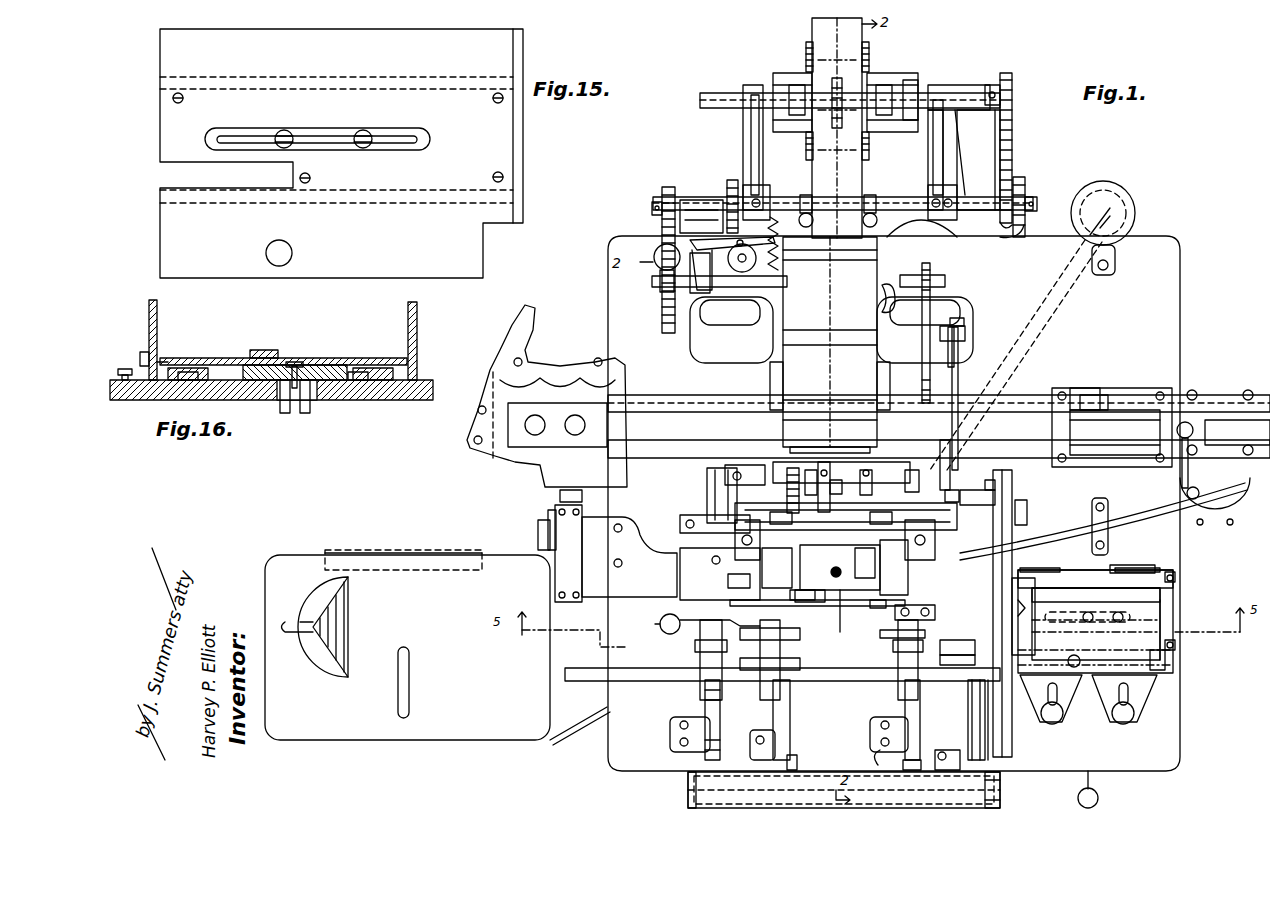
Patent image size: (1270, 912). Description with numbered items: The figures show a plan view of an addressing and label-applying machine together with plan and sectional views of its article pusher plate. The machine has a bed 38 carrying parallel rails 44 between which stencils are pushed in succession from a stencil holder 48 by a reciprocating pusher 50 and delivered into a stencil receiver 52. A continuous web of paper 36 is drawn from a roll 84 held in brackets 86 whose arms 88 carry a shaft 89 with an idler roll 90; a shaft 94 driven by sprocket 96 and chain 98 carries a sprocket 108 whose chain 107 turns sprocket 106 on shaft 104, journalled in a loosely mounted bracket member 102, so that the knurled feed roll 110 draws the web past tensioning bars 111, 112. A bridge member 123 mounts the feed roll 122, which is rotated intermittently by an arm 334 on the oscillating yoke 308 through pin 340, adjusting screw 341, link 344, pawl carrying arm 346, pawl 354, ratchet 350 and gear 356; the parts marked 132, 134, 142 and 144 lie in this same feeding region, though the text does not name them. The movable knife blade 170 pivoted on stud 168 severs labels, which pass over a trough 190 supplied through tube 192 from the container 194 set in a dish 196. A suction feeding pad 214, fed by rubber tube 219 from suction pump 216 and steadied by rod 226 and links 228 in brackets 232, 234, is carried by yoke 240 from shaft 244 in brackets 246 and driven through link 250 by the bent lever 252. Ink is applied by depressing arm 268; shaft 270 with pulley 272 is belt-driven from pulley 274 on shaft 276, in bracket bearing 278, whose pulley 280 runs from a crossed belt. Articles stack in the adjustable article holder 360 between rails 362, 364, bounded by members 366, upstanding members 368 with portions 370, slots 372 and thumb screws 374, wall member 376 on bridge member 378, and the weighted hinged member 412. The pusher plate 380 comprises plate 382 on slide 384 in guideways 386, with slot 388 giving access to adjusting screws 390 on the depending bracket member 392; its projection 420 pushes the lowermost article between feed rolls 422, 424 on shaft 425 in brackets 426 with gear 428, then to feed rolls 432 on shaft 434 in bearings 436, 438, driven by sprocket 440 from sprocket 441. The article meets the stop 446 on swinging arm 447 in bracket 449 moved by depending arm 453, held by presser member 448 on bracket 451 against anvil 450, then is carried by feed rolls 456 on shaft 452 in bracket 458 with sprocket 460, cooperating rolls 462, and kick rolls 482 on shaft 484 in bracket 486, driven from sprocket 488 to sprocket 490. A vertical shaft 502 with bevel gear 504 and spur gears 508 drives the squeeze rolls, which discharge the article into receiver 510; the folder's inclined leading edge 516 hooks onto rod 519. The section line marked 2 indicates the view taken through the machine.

In FIG. 1, the section line 2 is at (667, 257).
In FIG. 1, the continuous web of paper 36 is at (856, 175).
In FIG. 16, the bed 38 is at (422, 380).
In FIG. 1, the bed 38 is at (1172, 324).
In FIG. 1, the rails 44 is at (1014, 398).
In FIG. 1, the stencil holder 48 is at (1104, 390).
In FIG. 1, the pusher 50 is at (1136, 420).
In FIG. 1, the stencil receiver 52 is at (530, 440).
In FIG. 1, the roll of paper 84 is at (812, 30).
In FIG. 1, the brackets 86 is at (940, 86).
In FIG. 1, the rearwardly extending arms 88 is at (758, 165).
In FIG. 1, the shaft 89 is at (768, 93).
In FIG. 1, the idler roll 90 is at (912, 75).
In FIG. 1, the shaft 94 is at (1036, 205).
In FIG. 1, the sprocket 96 is at (1026, 185).
In FIG. 1, the chain 98 is at (1024, 232).
In FIG. 1, the bracket member 102 is at (990, 157).
In FIG. 1, the shaft 104 is at (892, 92).
In FIG. 1, the sprocket 106 is at (1013, 83).
In FIG. 1, the chain 107 is at (1003, 142).
In FIG. 1, the sprocket 108 is at (1002, 226).
In FIG. 1, the knurled feed roll 110 is at (836, 120).
In FIG. 1, the tensioning and curl-removing bar 111 is at (898, 198).
In FIG. 1, the tensioning and curl-removing bar 112 is at (910, 208).
In FIG. 1, the feed roll 122 is at (825, 487).
In FIG. 1, the bridge member 123 is at (765, 462).
In FIG. 1, the guide 132 is at (798, 481).
In FIG. 1, the guide 134 is at (870, 490).
In FIG. 1, the block 142 is at (840, 490).
In FIG. 1, the drum 144 is at (860, 470).
In FIG. 1, the stud 168 is at (786, 490).
In FIG. 1, the movable knife blade 170 is at (788, 524).
In FIG. 1, the trough 190 is at (890, 524).
In FIG. 1, the tube 192 is at (1120, 320).
In FIG. 1, the container 194 is at (1126, 205).
In FIG. 1, the dish like container 196 is at (1136, 212).
In FIG. 1, the suction feeding pad 214 is at (840, 567).
In FIG. 1, the suction pump 216 is at (1215, 520).
In FIG. 1, the rubber tube 219 is at (1132, 520).
In FIG. 1, the rod 226 is at (860, 573).
In FIG. 1, the pivoted links 228 is at (867, 609).
In FIG. 1, the bracket 232 is at (895, 586).
In FIG. 1, the bracket 234 is at (772, 558).
In FIG. 1, the reciprocating yoke 240 is at (849, 613).
In FIG. 1, the shaft 244 is at (849, 516).
In FIG. 1, the upstanding brackets 246 is at (735, 543).
In FIG. 1, the link 250 is at (768, 478).
In FIG. 1, the bent lever 252 is at (939, 424).
In FIG. 1, the forwardly extending arm 268 is at (882, 302).
In FIG. 1, the shaft 270 is at (665, 308).
In FIG. 1, the pulley 272 is at (672, 285).
In FIG. 1, the pulley 274 is at (662, 195).
In FIG. 1, the shaft 276 is at (650, 208).
In FIG. 1, the bracket bearing member 278 is at (695, 212).
In FIG. 1, the pulley 280 is at (728, 190).
In FIG. 1, the oscillating yoke 308 is at (962, 298).
In FIG. 1, the upwardly extending arm 334 is at (966, 333).
In FIG. 1, the pin 340 is at (972, 366).
In FIG. 1, the adjusting screw 341 is at (965, 322).
In FIG. 1, the link 344 is at (960, 397).
In FIG. 1, the pawl carrying arm 346 is at (958, 494).
In FIG. 1, the ratchet 350 is at (995, 440).
In FIG. 1, the pawl 354 is at (990, 492).
In FIG. 1, the gear 356 is at (920, 470).
In FIG. 1, the adjustable article holder 360 is at (1092, 570).
In FIG. 1, the rail 362 is at (1008, 562).
In FIG. 1, the rail 364 is at (567, 676).
In FIG. 1, the members 366 is at (1068, 568).
In FIG. 1, the upstanding members 368 is at (1045, 670).
In FIG. 1, the horizontally extending portions 370 is at (1040, 692).
In FIG. 1, the slots 372 is at (1048, 695).
In FIG. 1, the thumb screws 374 is at (1052, 724).
In FIG. 1, the wall member 376 is at (1038, 603).
In FIG. 1, the bridge member 378 is at (972, 703).
In FIG. 15, the pusher plate 380 is at (525, 62).
In FIG. 16, the pusher plate 380 is at (232, 355).
In FIG. 1, the pusher plate 380 is at (1174, 578).
In FIG. 15, the plate 382 is at (170, 52).
In FIG. 16, the plate 382 is at (208, 356).
In FIG. 1, the plate 382 is at (1096, 615).
In FIG. 16, the slide 384 is at (318, 362).
In FIG. 16, the guideways 386 is at (232, 385).
In FIG. 1, the guideways 386 is at (1176, 589).
In FIG. 15, the slot 388 is at (335, 128).
In FIG. 16, the slot 388 is at (291, 358).
In FIG. 1, the slot 388 is at (1108, 612).
In FIG. 15, the adjusting screws 390 is at (285, 130).
In FIG. 16, the adjusting screws 390 is at (298, 360).
In FIG. 1, the adjusting screws 390 is at (1122, 613).
In FIG. 16, the depending bracket member 392 is at (320, 395).
In FIG. 1, the weighted hinged member 412 is at (1160, 616).
In FIG. 1, the projection 420 is at (1160, 624).
In FIG. 1, the feed roll 422 is at (952, 648).
In FIG. 1, the feed roll 424 is at (952, 663).
In FIG. 1, the shaft 425 is at (975, 716).
In FIG. 1, the brackets 426 is at (955, 744).
In FIG. 1, the gear 428 is at (975, 490).
In FIG. 1, the feed rolls 432 is at (905, 637).
In FIG. 1, the shaft 434 is at (905, 705).
In FIG. 1, the bearing 436 is at (870, 734).
In FIG. 1, the bearing 438 is at (898, 612).
In FIG. 1, the sprocket 440 is at (885, 770).
In FIG. 1, the sprocket 441 is at (1000, 795).
In FIG. 1, the stop 446 is at (760, 606).
In FIG. 1, the swinging arm 447 is at (692, 622).
In FIG. 1, the presser member 448 is at (808, 606).
In FIG. 1, the bracket 449 is at (705, 520).
In FIG. 1, the anvil 450 is at (895, 636).
In FIG. 1, the bracket member 451 is at (810, 597).
In FIG. 1, the shaft 452 is at (785, 712).
In FIG. 1, the depending arm 453 is at (715, 500).
In FIG. 1, the feed rolls 456 is at (782, 640).
In FIG. 1, the bracket member 458 is at (776, 738).
In FIG. 1, the sprocket 460 is at (778, 750).
In FIG. 1, the feed rolls 462 is at (800, 634).
In FIG. 1, the feed rolls 482 is at (700, 645).
In FIG. 1, the shaft 484 is at (706, 695).
In FIG. 1, the bracket member 486 is at (705, 717).
In FIG. 1, the sprocket 488 is at (976, 790).
In FIG. 1, the sprocket 490 is at (690, 795).
In FIG. 1, the vertical shaft 502 is at (616, 553).
In FIG. 1, the bevel gear 504 is at (540, 540).
In FIG. 1, the spur gears 508 is at (575, 500).
In FIG. 1, the receiver 510 is at (407, 645).
In FIG. 1, the upwardly inclined leading edge 516 is at (720, 574).
In FIG. 1, the rod 519 is at (741, 582).